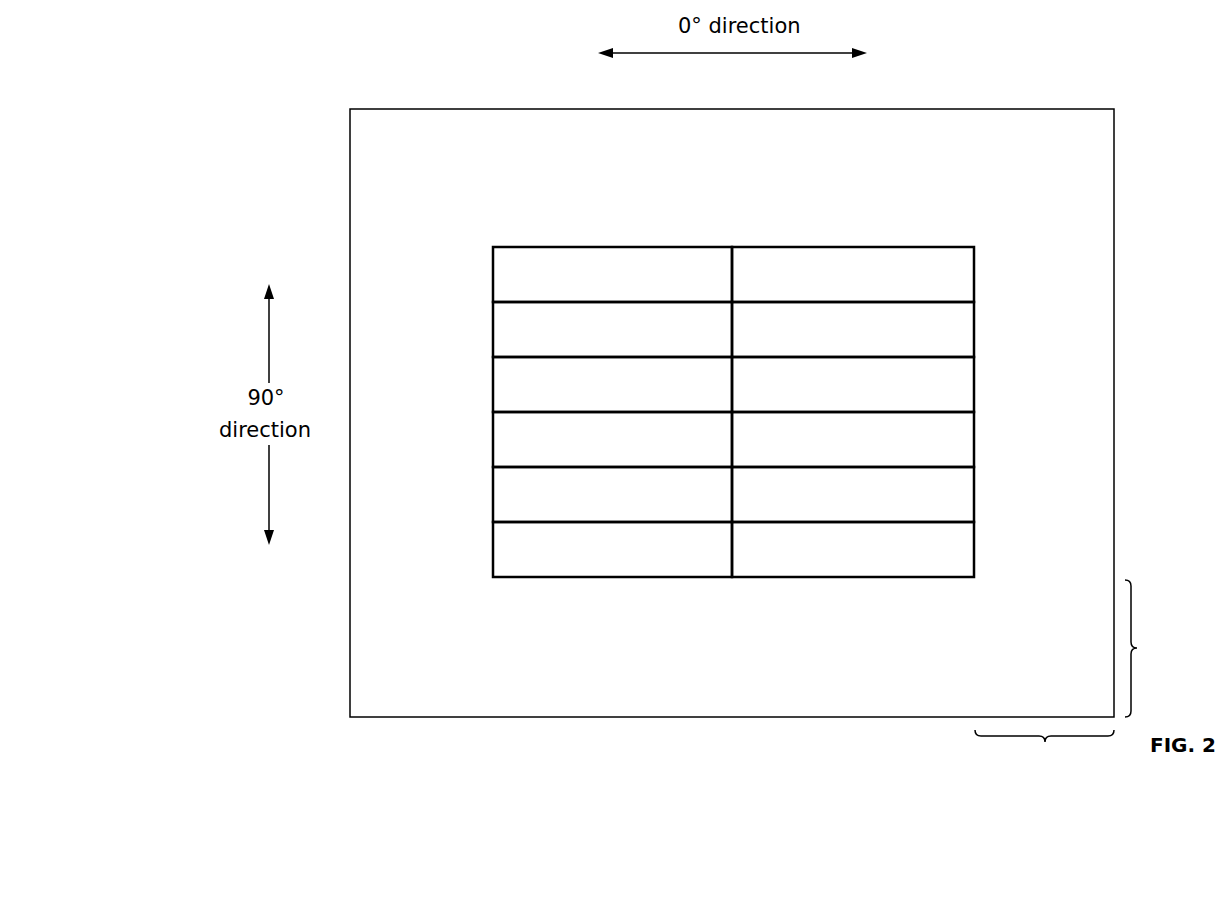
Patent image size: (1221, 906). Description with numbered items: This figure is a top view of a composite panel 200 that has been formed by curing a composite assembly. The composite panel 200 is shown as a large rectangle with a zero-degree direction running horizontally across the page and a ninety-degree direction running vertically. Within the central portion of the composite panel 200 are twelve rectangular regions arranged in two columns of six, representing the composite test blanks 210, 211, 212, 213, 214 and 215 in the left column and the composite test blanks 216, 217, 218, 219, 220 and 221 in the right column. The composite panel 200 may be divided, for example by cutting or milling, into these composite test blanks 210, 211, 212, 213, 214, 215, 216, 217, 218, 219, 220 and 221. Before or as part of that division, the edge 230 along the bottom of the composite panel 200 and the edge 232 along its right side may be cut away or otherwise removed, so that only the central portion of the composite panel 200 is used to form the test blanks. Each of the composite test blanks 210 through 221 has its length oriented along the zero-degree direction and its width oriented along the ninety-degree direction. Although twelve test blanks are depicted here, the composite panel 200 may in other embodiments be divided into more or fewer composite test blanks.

The composite panel 200 is at (296, 61).
The composite test blank 210 is at (612, 274).
The composite test blank 211 is at (612, 329).
The composite test blank 212 is at (612, 384).
The composite test blank 213 is at (612, 439).
The composite test blank 214 is at (612, 494).
The composite test blank 215 is at (612, 549).
The composite test blank 216 is at (853, 274).
The composite test blank 217 is at (853, 329).
The composite test blank 218 is at (853, 384).
The composite test blank 219 is at (853, 439).
The composite test blank 220 is at (853, 494).
The composite test blank 221 is at (853, 549).
The edge 230 is at (1045, 742).
The edge 232 is at (1137, 648).